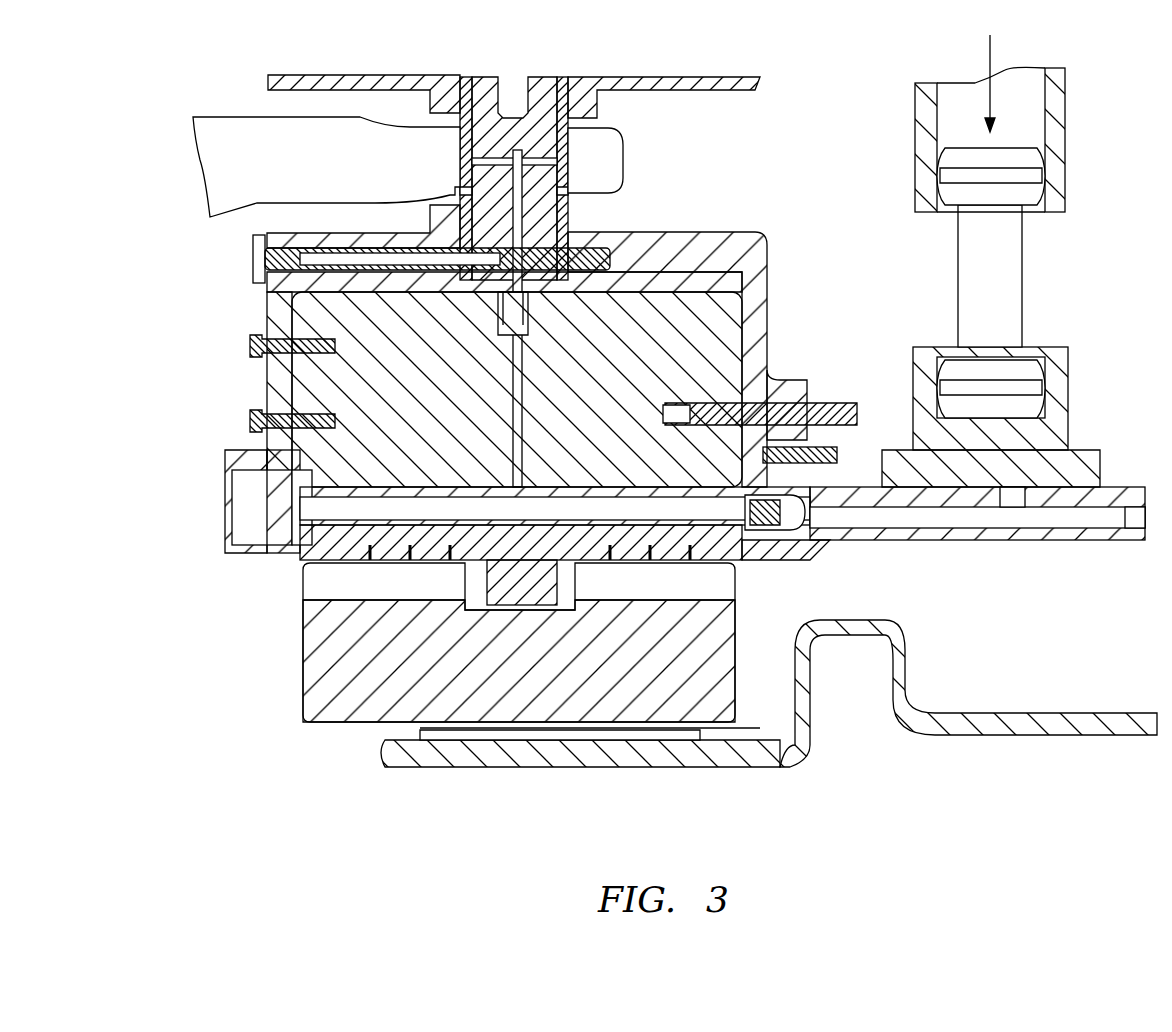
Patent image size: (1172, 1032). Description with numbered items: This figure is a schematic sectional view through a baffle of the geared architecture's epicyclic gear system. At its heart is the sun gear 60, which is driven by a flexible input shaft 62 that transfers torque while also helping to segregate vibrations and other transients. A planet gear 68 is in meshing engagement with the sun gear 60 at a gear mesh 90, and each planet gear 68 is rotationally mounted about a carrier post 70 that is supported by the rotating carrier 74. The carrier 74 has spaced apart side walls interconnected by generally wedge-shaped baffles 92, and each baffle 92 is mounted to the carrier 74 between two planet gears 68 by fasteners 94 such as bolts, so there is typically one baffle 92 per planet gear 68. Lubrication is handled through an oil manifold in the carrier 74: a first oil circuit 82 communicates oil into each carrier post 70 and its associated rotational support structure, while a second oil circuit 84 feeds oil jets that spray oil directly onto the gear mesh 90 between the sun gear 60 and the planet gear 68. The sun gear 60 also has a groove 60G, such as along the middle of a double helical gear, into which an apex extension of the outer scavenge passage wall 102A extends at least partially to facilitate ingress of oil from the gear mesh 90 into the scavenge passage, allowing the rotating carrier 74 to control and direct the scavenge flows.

The sun gear 60 is at (509, 642).
The groove 60G is at (555, 615).
The flexible input shaft 62 is at (1018, 718).
The planet gear 68 is at (677, 573).
The carrier post 70 is at (233, 140).
The carrier 74 is at (228, 455).
The first oil circuit 82 is at (1035, 540).
The second oil circuit 84 is at (780, 507).
The gear mesh 90 is at (633, 587).
The baffle 92 is at (426, 406).
The fastener 94 is at (250, 348).
The bottom plate 102A is at (495, 590).